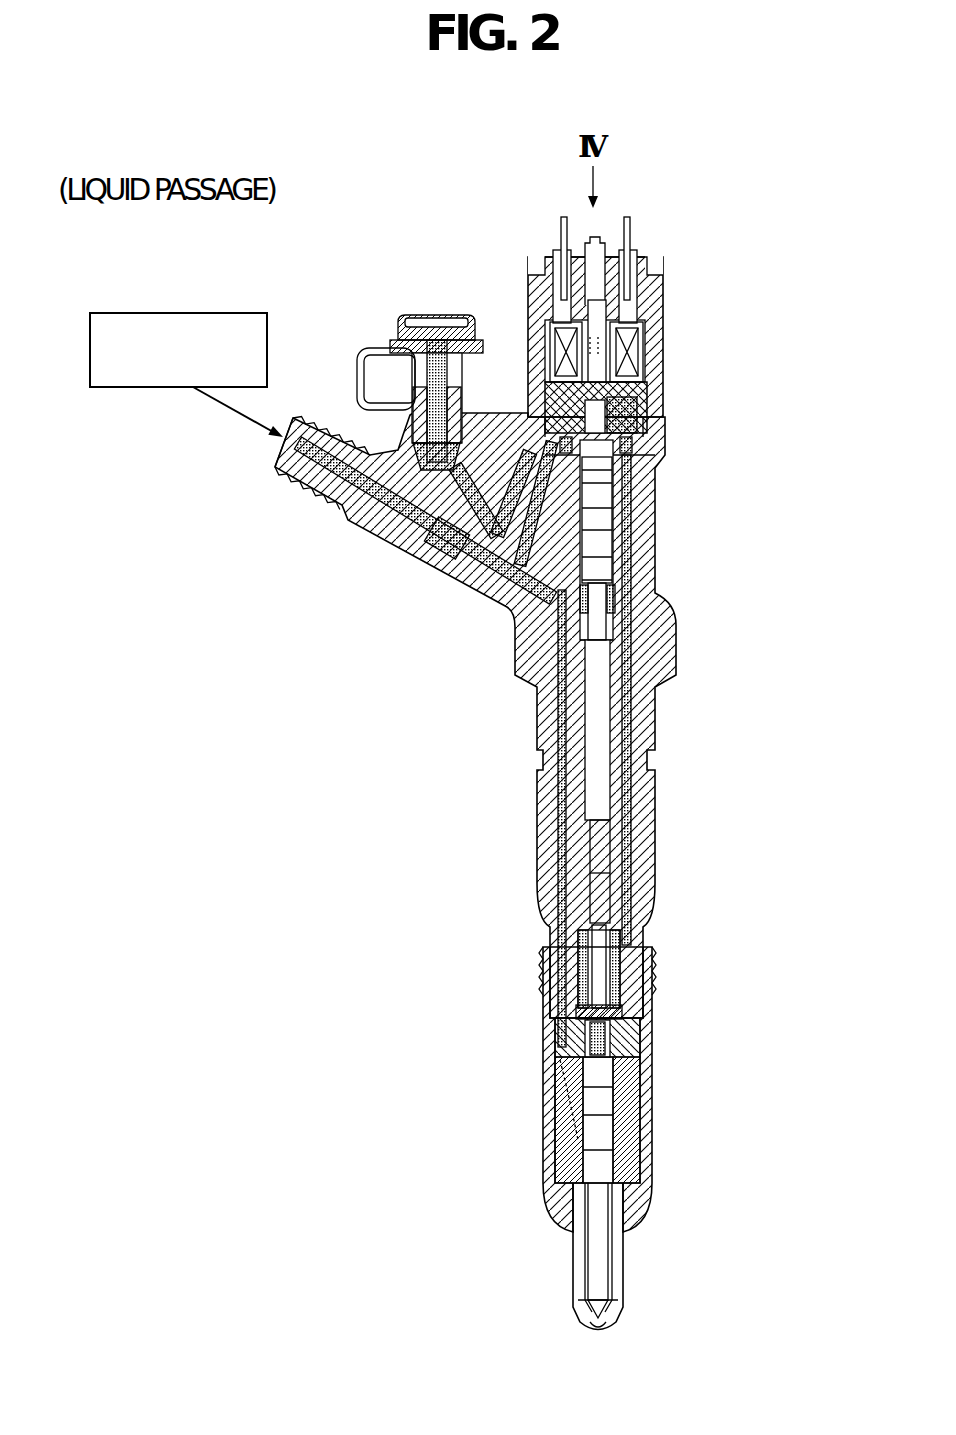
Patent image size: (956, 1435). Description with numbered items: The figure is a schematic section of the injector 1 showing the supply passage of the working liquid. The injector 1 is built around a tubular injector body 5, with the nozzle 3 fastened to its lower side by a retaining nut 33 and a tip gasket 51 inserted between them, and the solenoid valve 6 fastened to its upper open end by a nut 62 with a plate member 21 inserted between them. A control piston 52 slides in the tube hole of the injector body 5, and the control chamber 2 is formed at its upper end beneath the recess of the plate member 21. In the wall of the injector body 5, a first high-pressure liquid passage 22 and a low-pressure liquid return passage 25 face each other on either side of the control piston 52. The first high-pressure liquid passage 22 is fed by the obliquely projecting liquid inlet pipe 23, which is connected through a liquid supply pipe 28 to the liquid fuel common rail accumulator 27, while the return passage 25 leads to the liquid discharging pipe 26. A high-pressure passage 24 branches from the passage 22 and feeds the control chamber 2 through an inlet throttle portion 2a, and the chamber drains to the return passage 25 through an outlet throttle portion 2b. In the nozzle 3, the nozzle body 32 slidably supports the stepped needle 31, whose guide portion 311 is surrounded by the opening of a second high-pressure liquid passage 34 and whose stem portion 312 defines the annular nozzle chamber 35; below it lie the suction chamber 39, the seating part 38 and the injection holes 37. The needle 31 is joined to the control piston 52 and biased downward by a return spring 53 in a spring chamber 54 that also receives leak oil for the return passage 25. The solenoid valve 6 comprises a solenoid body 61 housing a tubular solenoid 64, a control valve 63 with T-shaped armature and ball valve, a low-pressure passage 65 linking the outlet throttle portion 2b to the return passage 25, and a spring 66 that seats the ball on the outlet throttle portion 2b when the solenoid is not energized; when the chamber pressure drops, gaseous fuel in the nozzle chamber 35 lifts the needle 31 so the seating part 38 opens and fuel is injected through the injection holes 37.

The injector 1 is at (716, 257).
The control chamber 2 is at (656, 475).
The inlet throttle portion 2a is at (447, 515).
The outlet throttle portion 2b is at (657, 443).
The plate member 21 is at (656, 463).
The first high-pressure liquid passage 22 is at (562, 810).
The liquid inlet pipe 23 is at (370, 527).
The high-pressure passage 24 is at (480, 567).
The low-pressure liquid return passage 25 is at (657, 730).
The liquid discharging pipe 26 is at (400, 313).
The liquid fuel common rail accumulator 27 is at (212, 313).
The liquid supply pipe 28 is at (243, 423).
The nozzle 3 is at (645, 1258).
The needle 31 is at (785, 1108).
The guide portion 311 is at (603, 1120).
The stem portion 312 is at (600, 1207).
The nozzle body 32 is at (627, 1083).
The retaining nut 33 is at (547, 1153).
The second high-pressure liquid passage 34 is at (560, 1068).
The nozzle chamber 35 is at (583, 1243).
The injection holes 37 is at (590, 1323).
The seating part 38 is at (618, 1318).
The suction chamber 39 is at (604, 1331).
The injector body 5 is at (537, 722).
The tip gasket 51 is at (553, 1030).
The control piston 52 is at (598, 547).
The return spring 53 is at (615, 952).
The spring chamber 54 is at (615, 992).
The solenoid valve 6 is at (664, 366).
The solenoid body 61 is at (662, 278).
The nut 62 is at (664, 307).
The control valve 63 is at (666, 420).
The tubular solenoid 64 is at (540, 345).
The low-pressure passage 65 is at (545, 372).
The spring 66 is at (601, 360).